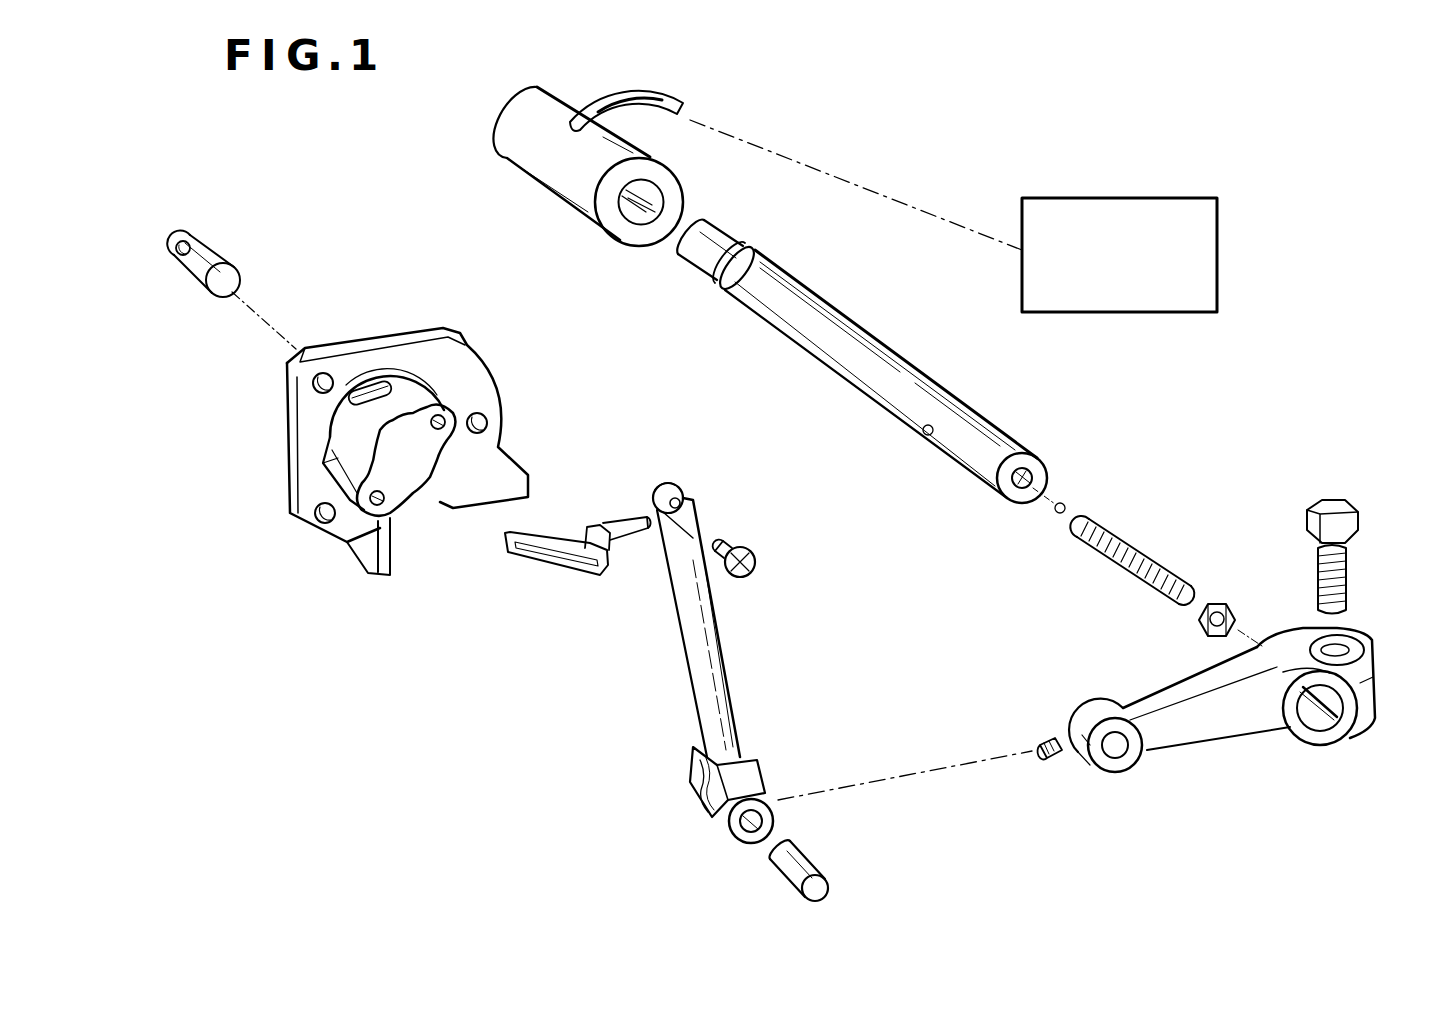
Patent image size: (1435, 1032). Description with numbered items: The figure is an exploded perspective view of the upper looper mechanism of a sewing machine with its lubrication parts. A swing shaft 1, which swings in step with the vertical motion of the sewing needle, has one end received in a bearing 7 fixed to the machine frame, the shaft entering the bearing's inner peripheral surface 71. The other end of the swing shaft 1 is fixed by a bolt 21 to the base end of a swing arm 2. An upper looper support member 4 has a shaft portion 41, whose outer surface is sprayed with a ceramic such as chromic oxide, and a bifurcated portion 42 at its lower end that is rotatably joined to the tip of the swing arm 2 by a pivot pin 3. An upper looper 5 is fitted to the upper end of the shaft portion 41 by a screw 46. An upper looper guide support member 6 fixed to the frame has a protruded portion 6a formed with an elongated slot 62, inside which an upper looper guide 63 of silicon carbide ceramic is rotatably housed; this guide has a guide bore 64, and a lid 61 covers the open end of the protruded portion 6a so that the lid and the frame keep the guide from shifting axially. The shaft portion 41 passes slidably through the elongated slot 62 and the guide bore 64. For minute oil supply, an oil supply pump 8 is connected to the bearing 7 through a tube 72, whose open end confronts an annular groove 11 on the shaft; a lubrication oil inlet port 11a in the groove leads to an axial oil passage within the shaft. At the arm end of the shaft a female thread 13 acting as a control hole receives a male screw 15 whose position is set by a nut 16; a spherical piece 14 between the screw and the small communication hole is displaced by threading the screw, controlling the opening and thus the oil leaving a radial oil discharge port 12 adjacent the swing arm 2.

The swing shaft 1 is at (872, 355).
The swing arm 2 is at (1200, 733).
The pivot pin 3 is at (805, 881).
The upper looper support member 4 is at (737, 663).
The upper looper 5 is at (603, 577).
The upper looper guide support member 6 is at (473, 385).
The protruded portion 6a is at (352, 433).
The bearing 7 is at (565, 167).
The oil supply pump 8 is at (1202, 262).
The annular groove 11 is at (722, 292).
The lubrication oil inlet port 11a is at (748, 250).
The oil discharge port 12 is at (926, 437).
The female thread 13 is at (1027, 486).
The spherical piece 14 is at (1063, 503).
The male screw 15 is at (1143, 558).
The nut 16 is at (1227, 597).
The bolt 21 is at (1320, 512).
The shaft portion 41 is at (717, 712).
The bifurcated portion 42 is at (748, 790).
The screw 46 is at (753, 553).
The lid 61 is at (402, 493).
The elongated slot 62 is at (368, 388).
The upper looper guide 63 is at (203, 250).
The guide bore 64 is at (182, 257).
The inner peripheral surface 71 is at (643, 218).
The tube 72 is at (684, 108).